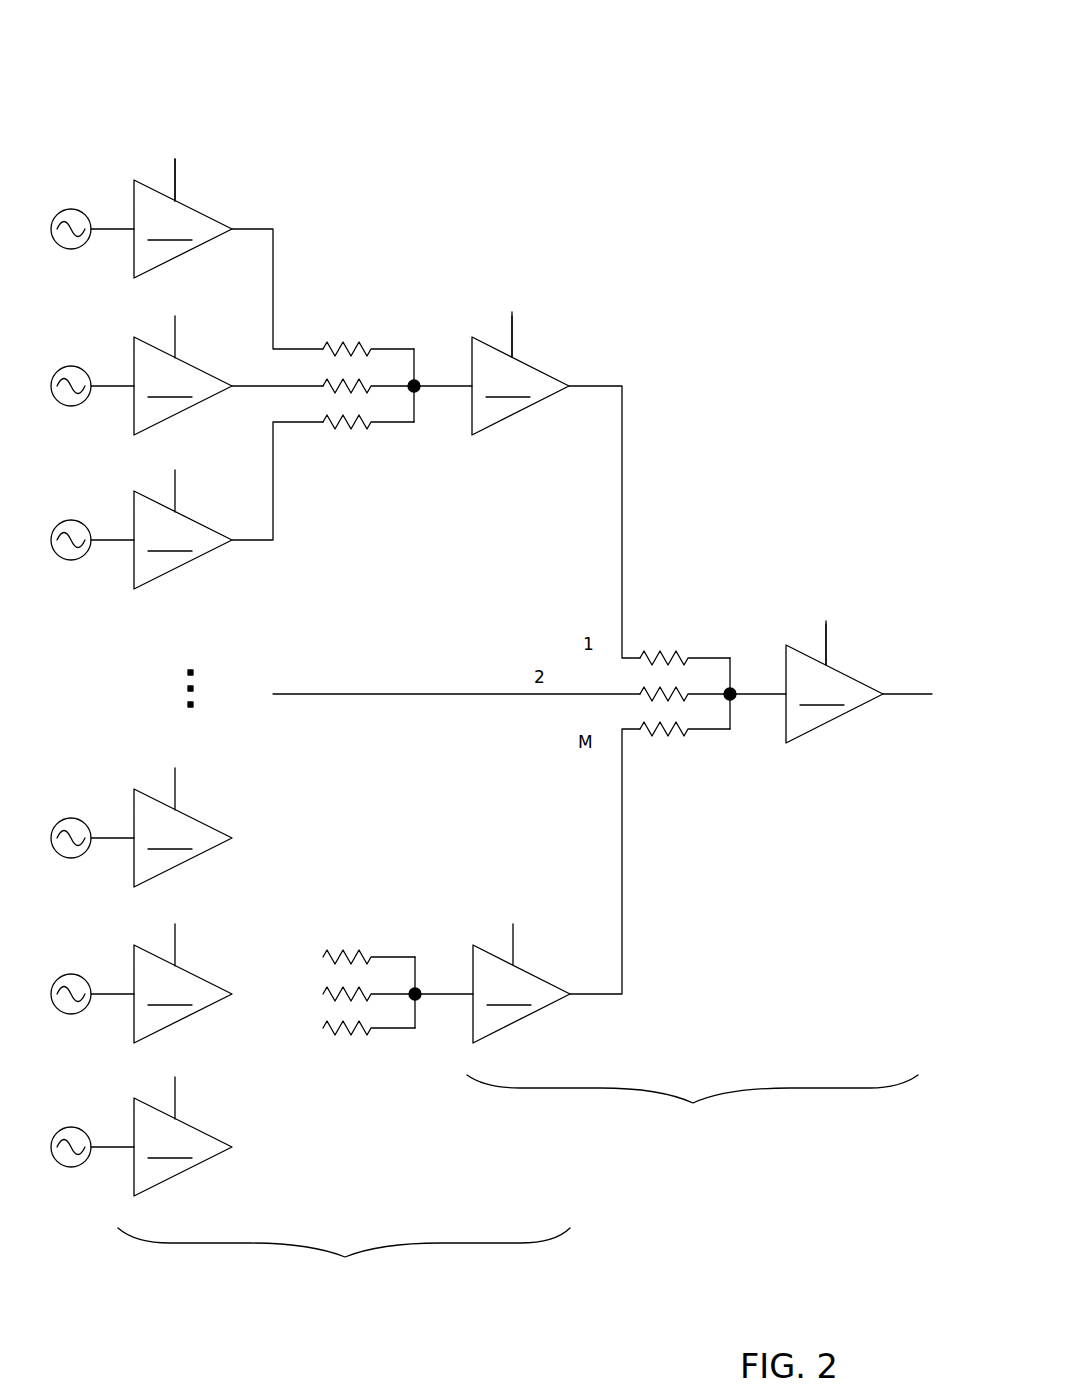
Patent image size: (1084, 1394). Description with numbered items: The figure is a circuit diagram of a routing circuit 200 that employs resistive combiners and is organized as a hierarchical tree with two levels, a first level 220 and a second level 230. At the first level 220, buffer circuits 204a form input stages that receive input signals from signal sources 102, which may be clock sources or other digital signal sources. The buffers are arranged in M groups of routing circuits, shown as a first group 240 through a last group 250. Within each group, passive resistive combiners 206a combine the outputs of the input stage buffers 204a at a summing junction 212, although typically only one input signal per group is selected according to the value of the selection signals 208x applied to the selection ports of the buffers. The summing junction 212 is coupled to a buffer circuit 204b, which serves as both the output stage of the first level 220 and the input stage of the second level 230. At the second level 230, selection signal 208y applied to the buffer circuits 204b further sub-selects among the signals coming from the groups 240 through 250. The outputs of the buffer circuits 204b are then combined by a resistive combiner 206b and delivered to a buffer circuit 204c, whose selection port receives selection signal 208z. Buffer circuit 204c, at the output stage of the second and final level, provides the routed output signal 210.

The routing circuit 200 is at (697, 23).
The signal source 102 is at (82, 164).
The input stage buffer circuit 204a is at (183, 677).
The selection signal 208x is at (201, 162).
The first level resistive combiner 206a is at (363, 313).
The summing junction 212 is at (439, 410).
The buffer circuit 204b is at (521, 679).
The selection signal 208y is at (536, 318).
The group of routing circuits 240 is at (390, 560).
The group of routing circuits 250 is at (397, 1168).
The resistive combiner 206b is at (685, 616).
The output stage buffer circuit 204c is at (834, 683).
The selection signal 208z is at (852, 624).
The routed output signal 210 is at (905, 740).
The first level 220 is at (354, 1338).
The second level 230 is at (720, 1182).